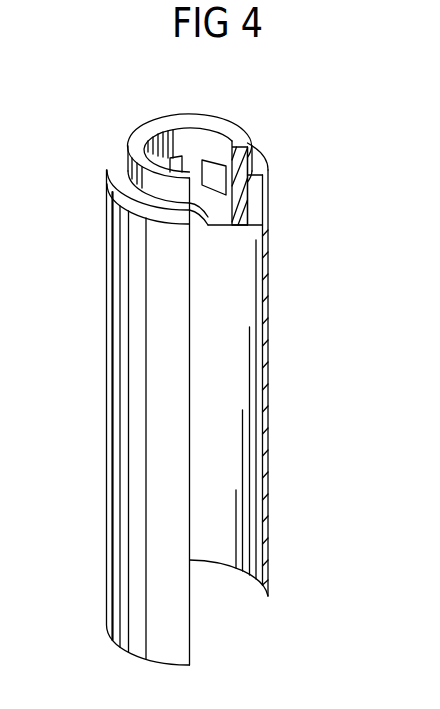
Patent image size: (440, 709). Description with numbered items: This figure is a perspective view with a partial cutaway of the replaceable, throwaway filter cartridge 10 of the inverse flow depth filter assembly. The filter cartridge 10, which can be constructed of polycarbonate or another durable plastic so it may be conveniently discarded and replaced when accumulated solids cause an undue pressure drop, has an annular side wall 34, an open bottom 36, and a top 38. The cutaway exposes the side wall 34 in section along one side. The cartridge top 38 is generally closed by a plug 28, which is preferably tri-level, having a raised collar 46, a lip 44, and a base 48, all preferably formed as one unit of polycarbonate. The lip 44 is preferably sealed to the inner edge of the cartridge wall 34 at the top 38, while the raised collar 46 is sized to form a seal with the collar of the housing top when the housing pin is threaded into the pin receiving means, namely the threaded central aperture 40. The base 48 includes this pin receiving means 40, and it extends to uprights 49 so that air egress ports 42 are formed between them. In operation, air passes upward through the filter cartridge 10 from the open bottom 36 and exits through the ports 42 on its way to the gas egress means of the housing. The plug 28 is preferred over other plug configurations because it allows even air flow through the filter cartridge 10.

The filter cartridge 10 is at (103, 512).
The plug 28 is at (150, 130).
The annular side wall 34 is at (180, 431).
The open bottom 36 is at (218, 565).
The top 38 is at (122, 176).
The threaded central aperture 40 is at (198, 222).
The air egress ports 42 is at (172, 165).
The lip 44 is at (138, 205).
The raised collar 46 is at (182, 195).
The base 48 is at (233, 213).
The uprights 49 is at (195, 166).